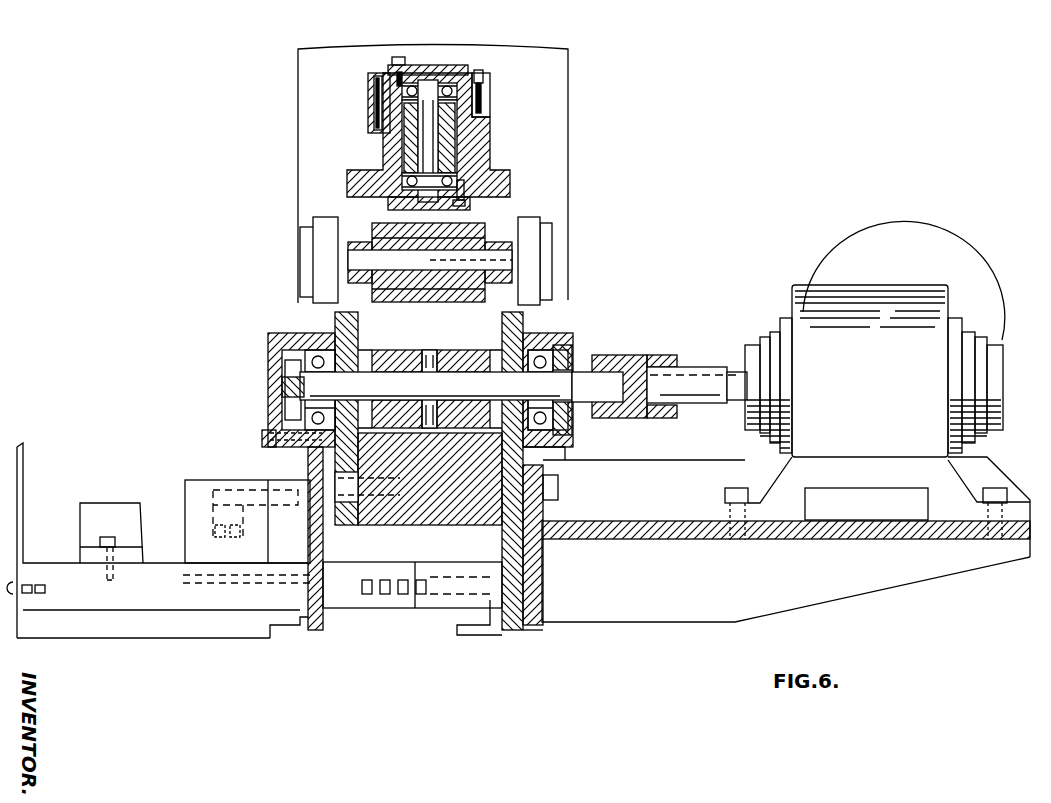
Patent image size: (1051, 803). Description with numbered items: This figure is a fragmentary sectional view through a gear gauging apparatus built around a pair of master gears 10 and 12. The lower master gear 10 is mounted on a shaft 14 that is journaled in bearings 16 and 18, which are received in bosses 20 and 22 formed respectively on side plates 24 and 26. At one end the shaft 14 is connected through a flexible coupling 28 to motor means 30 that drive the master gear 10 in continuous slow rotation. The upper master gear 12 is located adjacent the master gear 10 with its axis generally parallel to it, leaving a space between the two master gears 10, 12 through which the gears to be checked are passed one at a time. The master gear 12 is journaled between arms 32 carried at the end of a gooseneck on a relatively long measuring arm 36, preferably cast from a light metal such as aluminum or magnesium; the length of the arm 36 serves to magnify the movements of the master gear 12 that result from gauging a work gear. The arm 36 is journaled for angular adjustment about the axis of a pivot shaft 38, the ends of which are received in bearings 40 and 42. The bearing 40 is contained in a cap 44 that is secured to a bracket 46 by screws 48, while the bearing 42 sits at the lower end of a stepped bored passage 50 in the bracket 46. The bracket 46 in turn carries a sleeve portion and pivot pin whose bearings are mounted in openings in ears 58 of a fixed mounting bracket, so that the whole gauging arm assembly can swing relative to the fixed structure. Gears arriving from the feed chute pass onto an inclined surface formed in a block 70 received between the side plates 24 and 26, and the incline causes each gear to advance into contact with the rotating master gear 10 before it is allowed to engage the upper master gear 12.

The master gear 10 is at (462, 350).
The master gear 12 is at (457, 247).
The shaft 14 is at (427, 386).
The bearing 16 is at (270, 346).
The bearing 18 is at (546, 333).
The boss 20 is at (324, 332).
The boss 22 is at (570, 336).
The side plate 24 is at (347, 516).
The side plate 26 is at (502, 545).
The flexible coupling 28 is at (640, 355).
The motor means 30 is at (792, 292).
The arms 32 is at (372, 244).
The measuring arm 36 is at (400, 142).
The pivot shaft 38 is at (430, 132).
The bearing 40 is at (418, 92).
The bearing 42 is at (464, 190).
The cap 44 is at (490, 95).
The bracket 46 is at (448, 155).
The screws 48 is at (480, 74).
The stepped bored passage 50 is at (486, 170).
The ears 58 is at (325, 237).
The block 70 is at (425, 516).